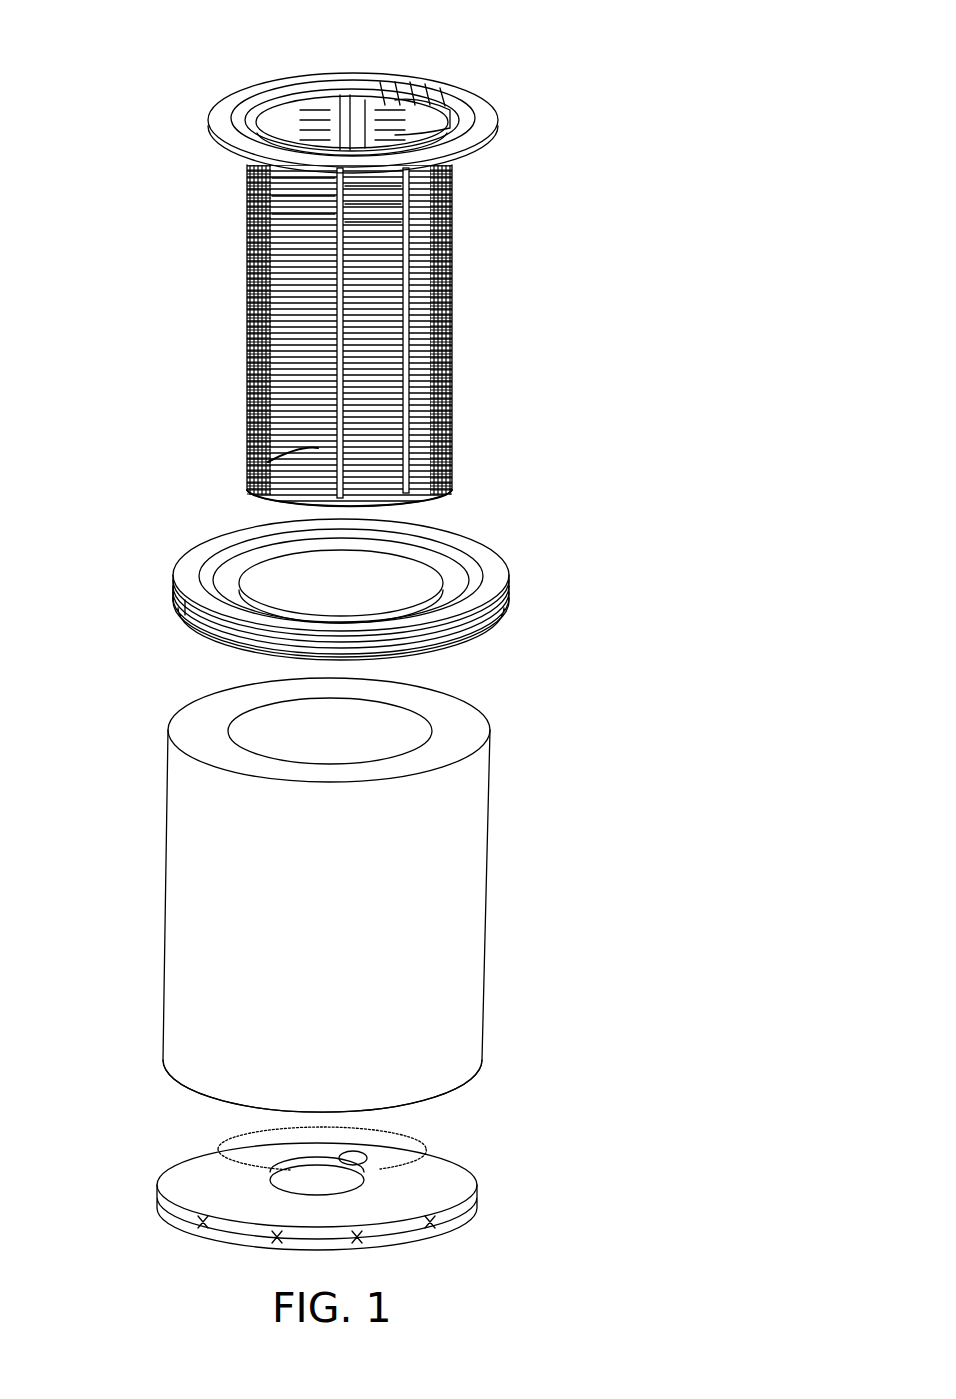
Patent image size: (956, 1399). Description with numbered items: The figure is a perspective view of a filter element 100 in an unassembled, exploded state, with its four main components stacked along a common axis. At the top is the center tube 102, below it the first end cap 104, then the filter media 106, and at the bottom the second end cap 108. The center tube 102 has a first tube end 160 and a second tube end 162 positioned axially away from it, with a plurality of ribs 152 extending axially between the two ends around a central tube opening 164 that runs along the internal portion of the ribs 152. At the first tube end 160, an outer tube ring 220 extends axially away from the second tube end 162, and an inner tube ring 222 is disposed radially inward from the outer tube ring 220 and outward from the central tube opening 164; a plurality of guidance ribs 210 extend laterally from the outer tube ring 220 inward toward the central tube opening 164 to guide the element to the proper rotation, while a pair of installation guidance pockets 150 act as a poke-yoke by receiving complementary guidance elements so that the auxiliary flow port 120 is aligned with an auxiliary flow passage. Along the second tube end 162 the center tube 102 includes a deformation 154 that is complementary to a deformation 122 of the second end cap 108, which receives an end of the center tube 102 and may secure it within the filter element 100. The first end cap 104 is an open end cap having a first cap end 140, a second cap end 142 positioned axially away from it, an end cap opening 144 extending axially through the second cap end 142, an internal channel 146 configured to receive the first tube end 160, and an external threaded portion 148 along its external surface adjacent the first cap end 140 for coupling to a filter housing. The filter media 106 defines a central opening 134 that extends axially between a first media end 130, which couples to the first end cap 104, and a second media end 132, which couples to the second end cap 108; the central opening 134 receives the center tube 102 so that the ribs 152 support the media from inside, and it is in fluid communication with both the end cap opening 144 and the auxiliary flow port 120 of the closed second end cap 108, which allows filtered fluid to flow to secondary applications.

The filter element 100 is at (133, 52).
The center tube 102 is at (457, 285).
The first end cap 104 is at (522, 585).
The filter media 106 is at (500, 885).
The second end cap 108 is at (483, 1180).
The auxiliary flow port 120 is at (355, 1160).
The deformation 122 is at (315, 1180).
The first media end 130 is at (203, 735).
The second media end 132 is at (170, 1077).
The central opening 134 is at (388, 738).
The first cap end 140 is at (205, 550).
The second cap end 142 is at (475, 645).
The end cap opening 144 is at (375, 578).
The internal channel 146 is at (220, 580).
The external threaded portion 148 is at (175, 590).
The installation guidance pockets 150 is at (427, 77).
The ribs 152 is at (248, 285).
The deformation 154 is at (305, 460).
The first tube end 160 is at (225, 130).
The second tube end 162 is at (447, 488).
The central tube opening 164 is at (405, 137).
The guidance ribs 210 is at (465, 80).
The outer tube ring 220 is at (485, 145).
The inner tube ring 222 is at (250, 97).